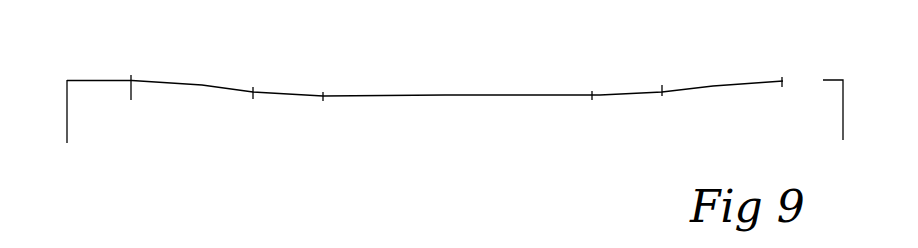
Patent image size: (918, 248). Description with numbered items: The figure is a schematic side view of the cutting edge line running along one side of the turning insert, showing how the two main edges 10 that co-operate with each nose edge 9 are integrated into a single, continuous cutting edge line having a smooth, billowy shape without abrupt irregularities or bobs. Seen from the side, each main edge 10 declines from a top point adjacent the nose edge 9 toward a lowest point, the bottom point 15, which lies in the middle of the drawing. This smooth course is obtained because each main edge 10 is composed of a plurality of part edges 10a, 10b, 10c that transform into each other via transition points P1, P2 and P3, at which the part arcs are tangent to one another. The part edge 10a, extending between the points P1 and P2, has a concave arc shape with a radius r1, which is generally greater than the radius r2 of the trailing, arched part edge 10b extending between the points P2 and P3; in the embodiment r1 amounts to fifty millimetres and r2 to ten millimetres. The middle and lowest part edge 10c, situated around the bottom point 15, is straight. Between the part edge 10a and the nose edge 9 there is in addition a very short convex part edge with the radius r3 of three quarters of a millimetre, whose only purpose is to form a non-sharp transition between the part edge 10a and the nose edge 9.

The nose edge 9 is at (82, 83).
The main edge 10 is at (236, 101).
The part edge 10a is at (727, 86).
The part edge 10b is at (611, 92).
The part edge 10c is at (487, 94).
The bottom point 15 is at (447, 95).
The transition point P1 is at (132, 82).
The transition point P2 is at (255, 93).
The transition point P3 is at (323, 97).
The radius r1 is at (200, 85).
The radius r2 is at (280, 92).
The radius r3 is at (782, 85).